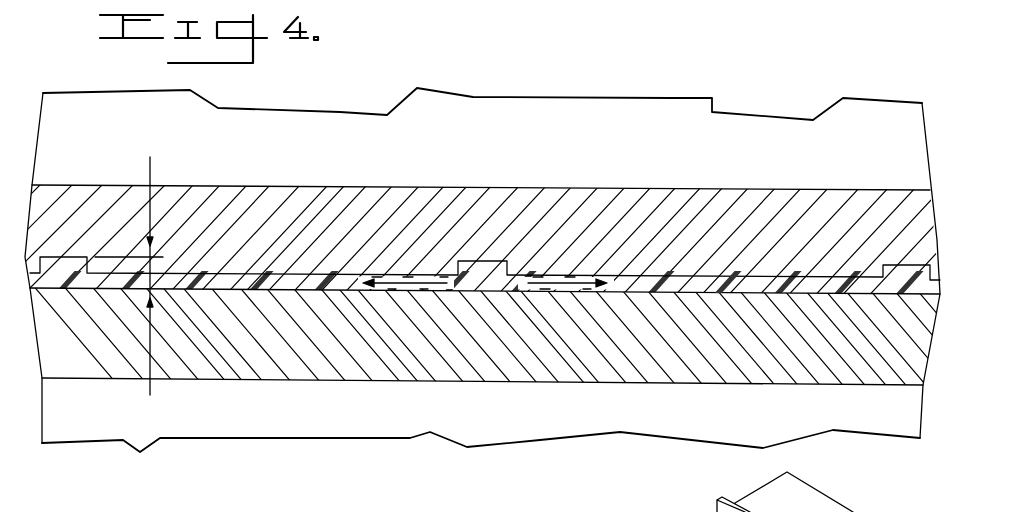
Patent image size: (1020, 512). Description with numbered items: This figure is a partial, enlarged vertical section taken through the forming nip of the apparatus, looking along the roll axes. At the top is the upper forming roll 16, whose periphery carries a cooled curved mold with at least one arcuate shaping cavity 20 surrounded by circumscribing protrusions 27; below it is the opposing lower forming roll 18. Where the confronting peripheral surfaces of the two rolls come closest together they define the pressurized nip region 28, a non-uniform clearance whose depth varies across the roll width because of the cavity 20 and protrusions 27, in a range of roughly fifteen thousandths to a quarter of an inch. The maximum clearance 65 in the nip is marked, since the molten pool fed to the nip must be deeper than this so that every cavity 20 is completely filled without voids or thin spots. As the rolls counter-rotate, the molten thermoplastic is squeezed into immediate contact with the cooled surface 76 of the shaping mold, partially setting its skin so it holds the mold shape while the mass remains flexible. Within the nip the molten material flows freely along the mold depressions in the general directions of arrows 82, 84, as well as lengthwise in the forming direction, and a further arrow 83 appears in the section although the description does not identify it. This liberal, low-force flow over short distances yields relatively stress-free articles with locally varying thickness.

The upper forming roll 16 is at (33, 147).
The lower forming roll 18 is at (75, 430).
The shaping cavity 20 is at (65, 257).
The protrusions 27 is at (279, 272).
The pressurized nip region 28 is at (948, 296).
The maximum clearance 65 is at (145, 287).
The cooled surface 76 is at (746, 264).
The arrow 82 is at (432, 288).
The flow direction 83 is at (358, 287).
The arrow 84 is at (562, 289).